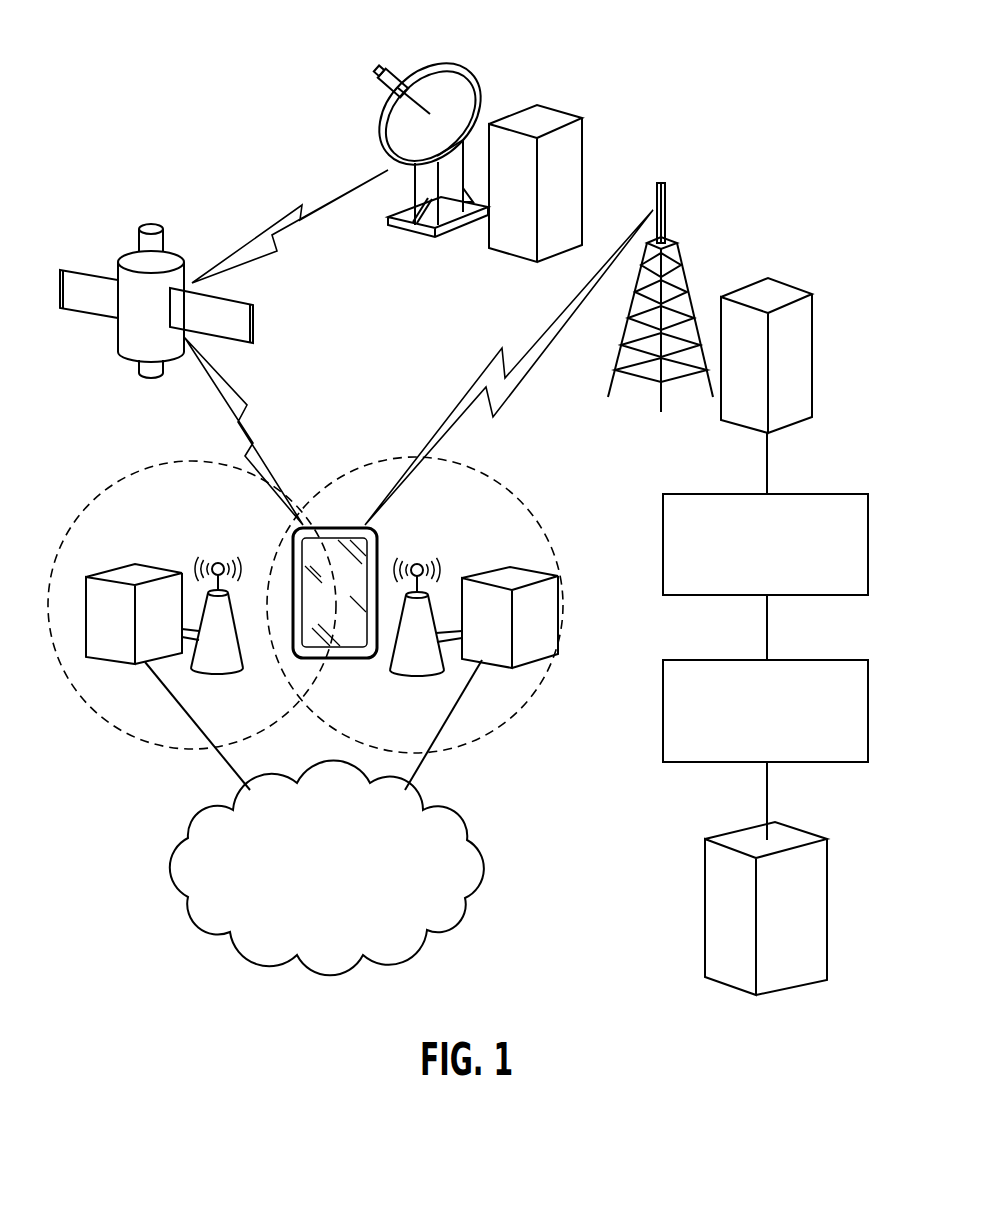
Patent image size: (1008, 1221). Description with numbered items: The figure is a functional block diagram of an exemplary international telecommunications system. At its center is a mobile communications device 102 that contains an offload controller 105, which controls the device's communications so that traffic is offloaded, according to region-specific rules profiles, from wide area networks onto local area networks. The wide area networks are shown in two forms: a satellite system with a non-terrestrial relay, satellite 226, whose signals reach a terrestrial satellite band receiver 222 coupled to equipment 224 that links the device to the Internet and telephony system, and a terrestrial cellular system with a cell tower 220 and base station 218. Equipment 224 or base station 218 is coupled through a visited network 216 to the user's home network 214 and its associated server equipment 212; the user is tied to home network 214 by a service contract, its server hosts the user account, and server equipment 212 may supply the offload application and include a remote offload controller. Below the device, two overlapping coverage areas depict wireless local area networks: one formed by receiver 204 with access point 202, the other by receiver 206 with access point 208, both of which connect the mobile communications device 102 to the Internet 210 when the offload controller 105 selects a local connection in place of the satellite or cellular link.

The mobile communications device 102 is at (302, 589).
The offload controller 105 is at (352, 621).
The access point 202 is at (130, 637).
The access point receiver 204 is at (234, 666).
The access point receiver 206 is at (432, 667).
The access point 208 is at (554, 636).
The Internet 210 is at (343, 893).
The server equipment 212 is at (809, 929).
The home network 214 is at (783, 752).
The visited network 216 is at (783, 586).
The base station 218 is at (806, 377).
The cell tower 220 is at (675, 236).
The terrestrial satellite band receiver 222 is at (462, 67).
The equipment 224 is at (576, 204).
The satellite 226 is at (173, 257).